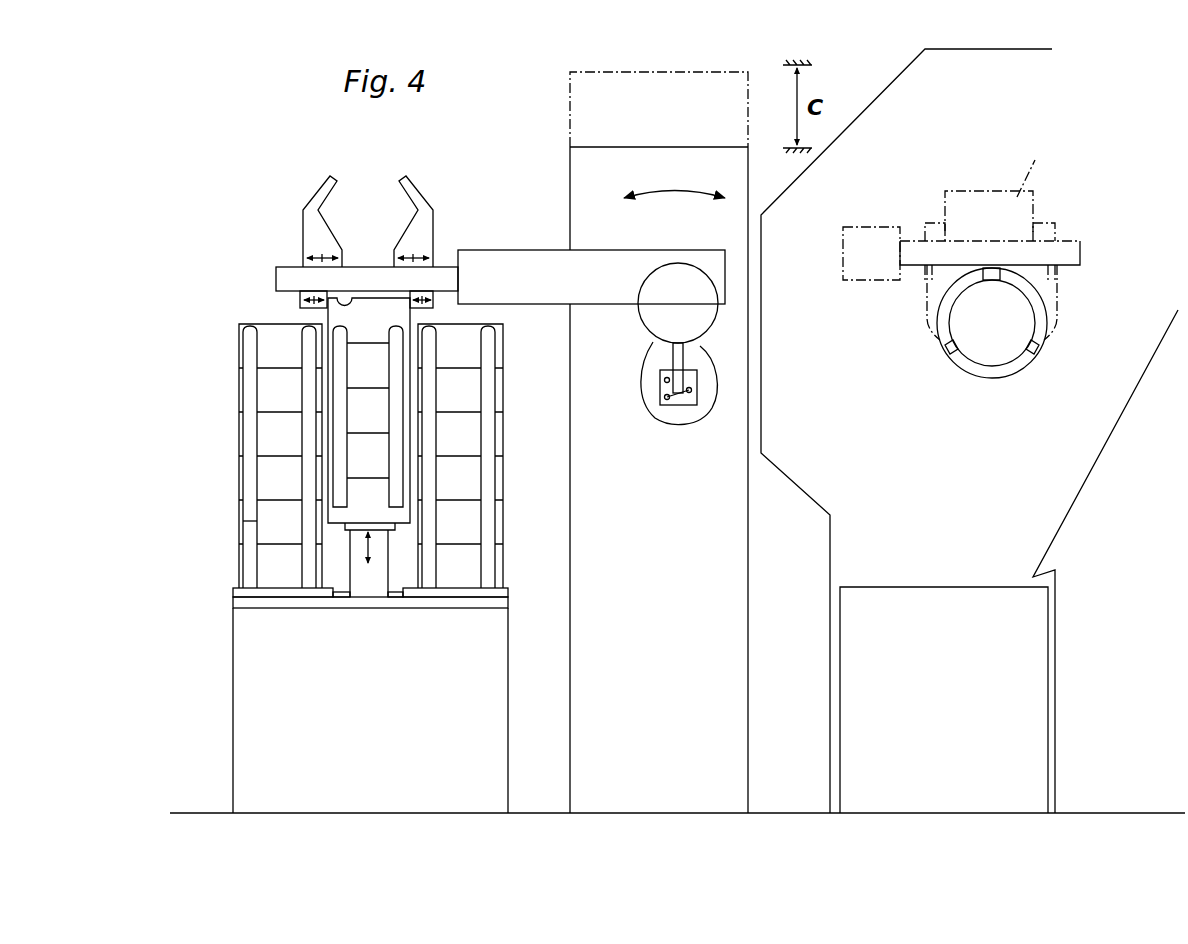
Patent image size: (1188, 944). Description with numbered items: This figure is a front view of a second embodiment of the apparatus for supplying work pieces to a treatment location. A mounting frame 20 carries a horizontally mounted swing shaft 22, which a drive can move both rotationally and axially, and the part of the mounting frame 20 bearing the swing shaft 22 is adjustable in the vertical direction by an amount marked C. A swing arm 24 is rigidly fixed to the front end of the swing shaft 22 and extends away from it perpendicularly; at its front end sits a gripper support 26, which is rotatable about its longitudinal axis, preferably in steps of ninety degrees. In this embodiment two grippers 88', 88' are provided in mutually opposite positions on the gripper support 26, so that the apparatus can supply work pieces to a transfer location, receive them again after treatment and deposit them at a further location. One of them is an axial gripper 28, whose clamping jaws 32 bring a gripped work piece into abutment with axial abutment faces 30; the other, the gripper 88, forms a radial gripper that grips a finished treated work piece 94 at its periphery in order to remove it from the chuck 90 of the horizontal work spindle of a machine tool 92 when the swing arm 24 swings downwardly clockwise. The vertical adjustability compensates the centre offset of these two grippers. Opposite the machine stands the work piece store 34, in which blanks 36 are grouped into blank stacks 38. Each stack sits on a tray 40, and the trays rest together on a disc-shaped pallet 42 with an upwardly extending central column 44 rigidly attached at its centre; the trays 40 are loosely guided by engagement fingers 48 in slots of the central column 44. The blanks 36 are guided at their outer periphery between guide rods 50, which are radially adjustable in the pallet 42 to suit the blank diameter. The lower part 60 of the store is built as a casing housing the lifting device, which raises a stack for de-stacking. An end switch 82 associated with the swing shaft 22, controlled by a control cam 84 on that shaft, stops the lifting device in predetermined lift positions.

The mounting frame 20 is at (750, 551).
The swing shaft 22 is at (652, 318).
The swing arm 24 is at (503, 249).
The gripper support 26 is at (440, 270).
The axial gripper 28 is at (300, 301).
The axial abutment faces 30 is at (350, 310).
The clamping jaws 32 is at (307, 295).
The work piece store 34 is at (252, 521).
The blanks 36 is at (240, 468).
The blank stacks 38 is at (236, 400).
The tray 40 is at (267, 588).
The pallet 42 is at (253, 607).
The central column 44 is at (358, 590).
The engagement fingers 48 is at (340, 600).
The guide rods 50 is at (300, 378).
The lower part 60 is at (248, 697).
The end switch 82 is at (675, 402).
The control cam 84 is at (670, 355).
The radial gripper 88 is at (588, 261).
The gripper 88' is at (728, 242).
The chuck 90 is at (963, 362).
The machine tool 92 is at (1070, 512).
The finished treated work piece 94 is at (993, 348).